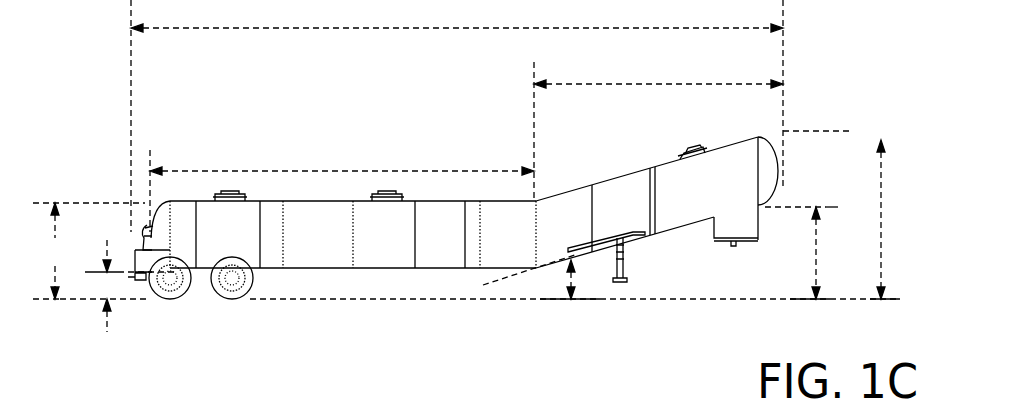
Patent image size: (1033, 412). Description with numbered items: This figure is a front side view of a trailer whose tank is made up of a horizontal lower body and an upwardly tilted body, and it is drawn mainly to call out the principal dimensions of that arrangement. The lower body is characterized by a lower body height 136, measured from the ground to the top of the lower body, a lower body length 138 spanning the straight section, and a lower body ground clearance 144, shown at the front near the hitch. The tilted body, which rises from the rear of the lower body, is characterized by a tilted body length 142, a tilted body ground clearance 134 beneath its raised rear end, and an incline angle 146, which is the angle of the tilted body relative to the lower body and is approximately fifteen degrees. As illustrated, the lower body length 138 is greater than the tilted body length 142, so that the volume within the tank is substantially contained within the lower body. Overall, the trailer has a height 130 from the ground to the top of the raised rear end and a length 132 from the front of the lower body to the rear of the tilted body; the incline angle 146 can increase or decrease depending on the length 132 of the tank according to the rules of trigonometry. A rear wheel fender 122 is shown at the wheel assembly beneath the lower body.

The rear wheel fender 122 is at (198, 262).
The height 130 is at (841, 211).
The length 132 is at (457, 116).
The tilted body ground clearance 134 is at (816, 253).
The lower body height 136 is at (82, 251).
The lower body length 138 is at (342, 189).
The tilted body length 142 is at (658, 84).
The lower body ground clearance 144 is at (106, 285).
The incline angle 146 is at (575, 278).